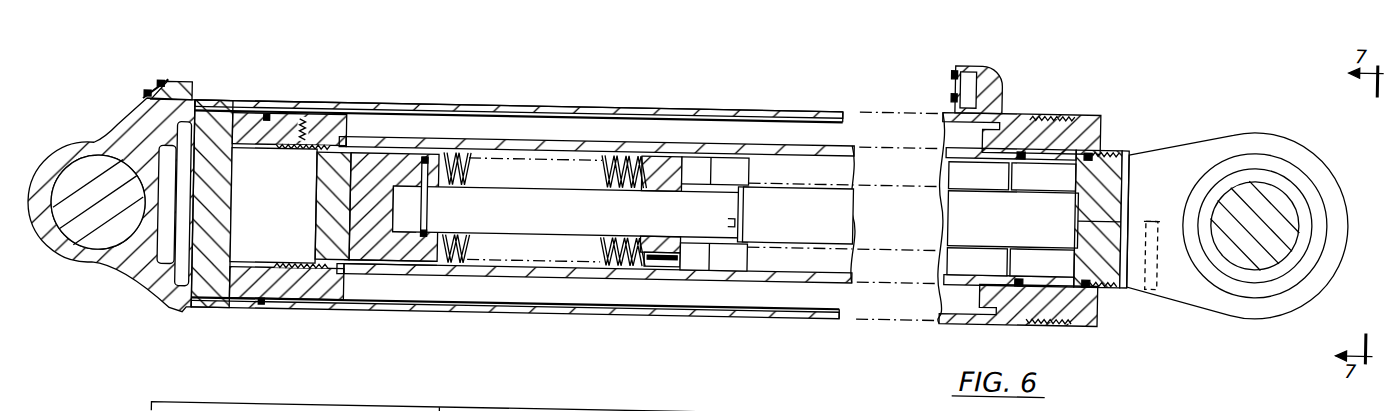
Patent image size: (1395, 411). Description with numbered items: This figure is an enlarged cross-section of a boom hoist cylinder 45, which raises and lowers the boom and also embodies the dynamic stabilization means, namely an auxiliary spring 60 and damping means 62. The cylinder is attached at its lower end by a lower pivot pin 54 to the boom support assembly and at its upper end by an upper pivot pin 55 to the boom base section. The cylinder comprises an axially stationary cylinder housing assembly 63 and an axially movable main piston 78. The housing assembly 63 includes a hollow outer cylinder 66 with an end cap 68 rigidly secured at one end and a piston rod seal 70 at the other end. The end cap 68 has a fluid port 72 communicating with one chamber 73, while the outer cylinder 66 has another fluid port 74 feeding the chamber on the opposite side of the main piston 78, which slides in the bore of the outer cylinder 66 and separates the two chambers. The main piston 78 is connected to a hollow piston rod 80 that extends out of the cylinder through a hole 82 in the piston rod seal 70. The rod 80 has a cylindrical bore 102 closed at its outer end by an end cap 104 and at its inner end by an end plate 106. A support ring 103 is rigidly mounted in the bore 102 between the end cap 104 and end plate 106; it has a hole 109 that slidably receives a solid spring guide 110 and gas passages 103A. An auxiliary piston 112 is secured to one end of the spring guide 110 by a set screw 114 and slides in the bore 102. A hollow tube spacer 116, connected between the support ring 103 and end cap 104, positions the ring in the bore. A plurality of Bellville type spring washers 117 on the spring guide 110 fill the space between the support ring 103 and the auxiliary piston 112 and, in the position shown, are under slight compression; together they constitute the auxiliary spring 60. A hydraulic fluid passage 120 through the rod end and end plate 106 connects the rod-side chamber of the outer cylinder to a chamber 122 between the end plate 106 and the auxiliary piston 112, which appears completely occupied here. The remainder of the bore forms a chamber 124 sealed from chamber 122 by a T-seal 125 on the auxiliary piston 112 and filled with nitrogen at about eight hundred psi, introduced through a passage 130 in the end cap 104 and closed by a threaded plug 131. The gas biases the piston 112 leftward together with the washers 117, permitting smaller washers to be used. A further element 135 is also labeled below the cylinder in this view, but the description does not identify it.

The boom hoist cylinder 45 is at (708, 95).
The lower pivot pin 54 is at (87, 177).
The upper pivot pin 55 is at (1285, 205).
The auxiliary spring 60 is at (468, 144).
The damping means 62 is at (793, 241).
The cylinder housing assembly 63 is at (497, 98).
The hollow outer cylinder 66 is at (322, 105).
The end cap 68 is at (143, 131).
The piston rod seal 70 is at (1103, 106).
The fluid port 72 is at (167, 104).
The chamber 73 is at (188, 137).
The fluid port 74 is at (988, 88).
The main piston 78 is at (277, 112).
The hollow piston rod 80 is at (743, 136).
The hole 82 is at (1027, 138).
The cylindrical bore 102 is at (557, 152).
The support ring 103 is at (670, 250).
The gas passages 103A is at (650, 253).
The end cap 104 is at (1115, 160).
The end plate 106 is at (323, 181).
The hole 109 is at (660, 181).
The spring guide 110 is at (543, 212).
The auxiliary piston 112 is at (357, 258).
The set screw 114 is at (427, 150).
The hollow tube spacer 116 is at (837, 238).
The Bellville type spring washers 117 is at (470, 250).
The hydraulic fluid passage 120 is at (345, 143).
The chamber 122 is at (347, 198).
The chamber 124 is at (801, 211).
The T-seal 125 is at (393, 264).
The passage 130 is at (1107, 206).
The threaded plug 131 is at (1153, 272).
The housing 135 is at (223, 410).